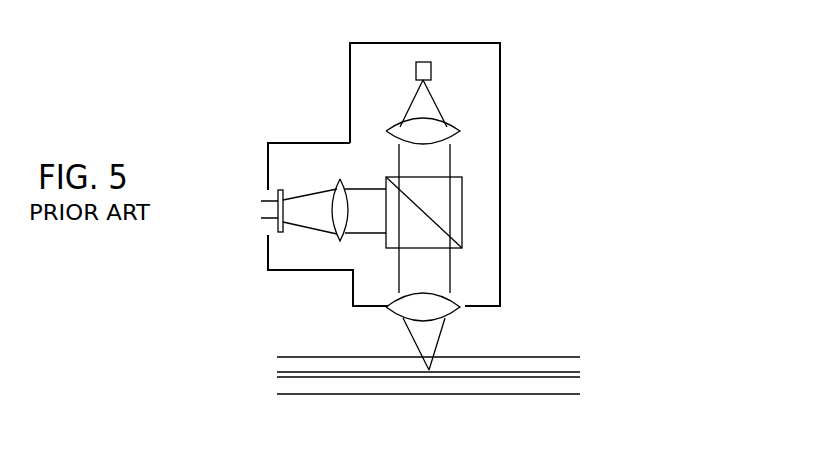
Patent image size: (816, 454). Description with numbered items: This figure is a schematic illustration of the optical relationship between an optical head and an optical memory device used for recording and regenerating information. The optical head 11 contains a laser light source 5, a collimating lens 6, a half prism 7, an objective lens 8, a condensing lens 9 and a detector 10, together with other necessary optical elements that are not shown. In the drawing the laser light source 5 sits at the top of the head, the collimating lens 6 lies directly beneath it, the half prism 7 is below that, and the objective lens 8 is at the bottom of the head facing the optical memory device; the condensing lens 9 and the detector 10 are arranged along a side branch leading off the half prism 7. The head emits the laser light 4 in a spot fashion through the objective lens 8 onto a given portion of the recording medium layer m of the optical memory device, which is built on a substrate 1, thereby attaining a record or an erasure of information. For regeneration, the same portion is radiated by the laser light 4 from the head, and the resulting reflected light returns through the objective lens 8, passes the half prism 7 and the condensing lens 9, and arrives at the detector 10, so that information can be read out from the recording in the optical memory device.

The substrate 1 is at (551, 360).
The laser light 4 is at (413, 331).
The laser light source 5 is at (423, 62).
The collimating lens 6 is at (452, 126).
The half prism 7 is at (462, 208).
The objective lens 8 is at (453, 308).
The condensing lens 9 is at (338, 235).
The detector 10 is at (263, 207).
The optical head 11 is at (347, 93).
The recording medium layer m is at (565, 370).